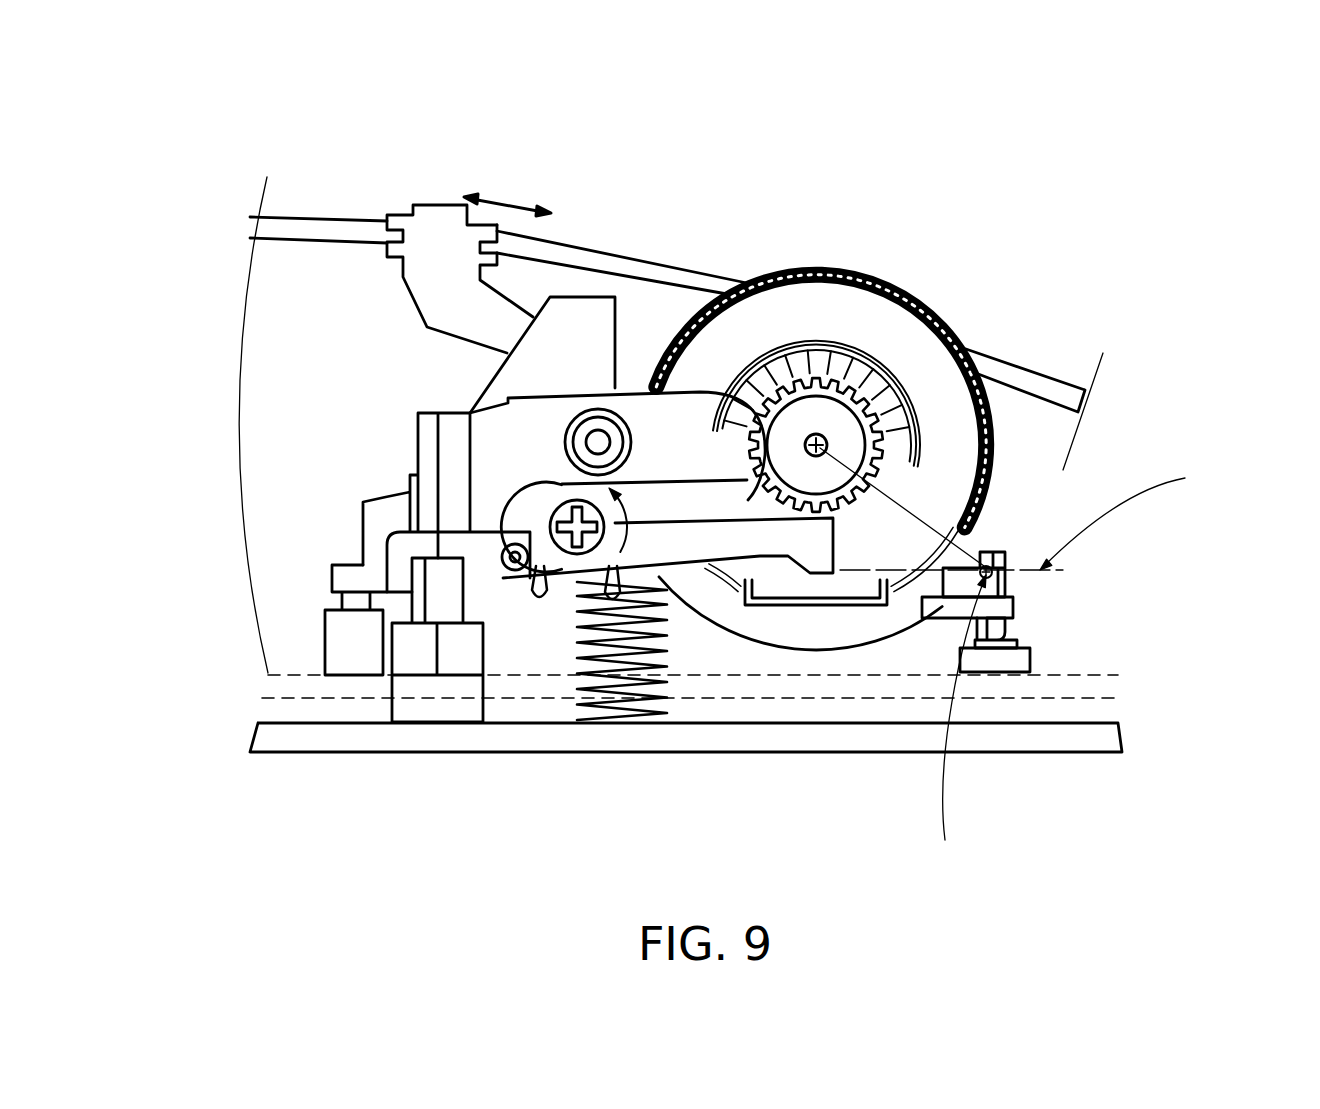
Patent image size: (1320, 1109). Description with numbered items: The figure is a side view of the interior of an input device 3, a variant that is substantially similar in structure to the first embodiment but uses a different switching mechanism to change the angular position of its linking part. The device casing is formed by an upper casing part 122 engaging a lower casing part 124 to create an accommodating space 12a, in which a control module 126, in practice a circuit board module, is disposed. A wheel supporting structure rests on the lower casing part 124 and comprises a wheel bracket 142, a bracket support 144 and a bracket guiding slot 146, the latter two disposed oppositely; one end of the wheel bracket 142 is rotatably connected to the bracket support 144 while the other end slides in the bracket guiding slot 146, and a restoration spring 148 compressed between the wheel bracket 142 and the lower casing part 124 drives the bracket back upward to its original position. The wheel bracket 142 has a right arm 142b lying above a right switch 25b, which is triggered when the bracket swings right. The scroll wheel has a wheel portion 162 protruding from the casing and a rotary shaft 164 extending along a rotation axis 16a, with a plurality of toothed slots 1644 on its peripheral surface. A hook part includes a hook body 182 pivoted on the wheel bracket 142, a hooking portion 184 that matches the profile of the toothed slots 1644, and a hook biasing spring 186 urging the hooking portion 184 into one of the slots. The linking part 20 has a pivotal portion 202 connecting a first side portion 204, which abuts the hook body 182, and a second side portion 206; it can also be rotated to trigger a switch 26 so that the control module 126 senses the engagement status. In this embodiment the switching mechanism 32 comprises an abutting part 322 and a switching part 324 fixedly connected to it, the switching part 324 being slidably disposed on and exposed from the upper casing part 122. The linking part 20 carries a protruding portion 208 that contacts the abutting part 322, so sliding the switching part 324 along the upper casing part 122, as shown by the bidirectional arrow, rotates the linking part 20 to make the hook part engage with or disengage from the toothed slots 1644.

The input device 3 is at (1068, 175).
The accommodating space 12a is at (293, 280).
The upper casing part 122 is at (302, 227).
The switching mechanism 32 is at (506, 218).
The switching part 324 is at (442, 232).
The abutting part 322 is at (553, 226).
The linking part 20 is at (438, 366).
The protruding portion 208 is at (588, 310).
The pivotal portion 202 is at (623, 403).
The second side portion 206 is at (428, 450).
The switch 26 is at (332, 637).
The bracket guiding slot 146 is at (457, 657).
The hook biasing spring 186 is at (542, 593).
The restoration spring 148 is at (645, 723).
The hook body 182 is at (757, 540).
The wheel bracket 142 is at (820, 650).
The hooking portion 184 is at (807, 637).
The wheel portion 162 is at (893, 333).
The toothed slots 1644 is at (870, 395).
The first side portion 204 is at (740, 450).
The rotary shaft 164 is at (830, 413).
The rotation axis 16a is at (830, 453).
The bracket support 144 is at (990, 560).
The right switch 25b is at (1003, 607).
The right arm 142b is at (1010, 635).
The control module 126 is at (1035, 668).
The lower casing part 124 is at (1032, 752).